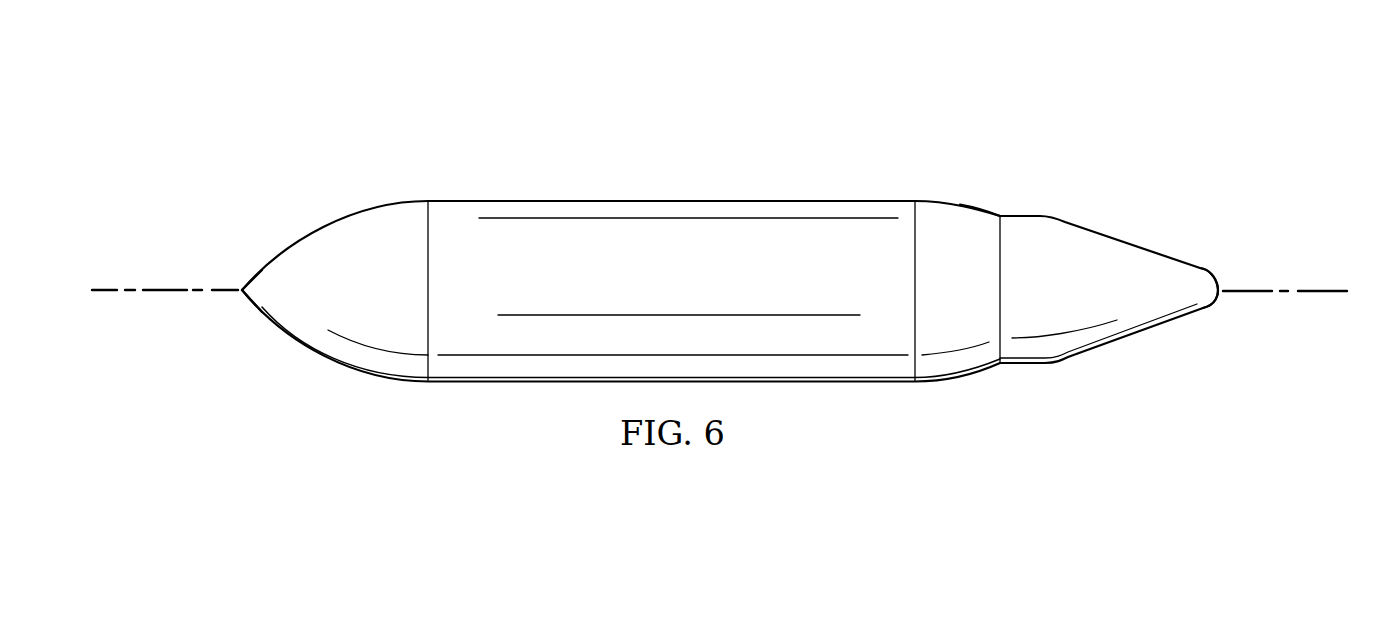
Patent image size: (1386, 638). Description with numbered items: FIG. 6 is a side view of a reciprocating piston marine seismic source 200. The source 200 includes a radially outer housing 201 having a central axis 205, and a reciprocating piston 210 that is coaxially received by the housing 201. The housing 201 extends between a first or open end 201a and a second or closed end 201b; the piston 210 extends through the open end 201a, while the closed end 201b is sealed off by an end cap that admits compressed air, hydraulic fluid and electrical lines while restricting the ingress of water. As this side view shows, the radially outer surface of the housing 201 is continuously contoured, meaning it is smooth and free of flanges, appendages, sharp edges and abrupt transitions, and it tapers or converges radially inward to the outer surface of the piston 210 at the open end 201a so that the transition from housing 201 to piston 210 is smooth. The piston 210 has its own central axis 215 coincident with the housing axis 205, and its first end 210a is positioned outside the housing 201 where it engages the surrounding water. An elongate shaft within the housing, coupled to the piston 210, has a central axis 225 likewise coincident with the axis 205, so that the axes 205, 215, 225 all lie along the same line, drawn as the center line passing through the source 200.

The marine seismic source 200 is at (466, 94).
The radially outer housing 201 is at (677, 192).
The first or open end 201a is at (1003, 188).
The second or closed end 201b is at (254, 303).
The central axis 205 is at (716, 261).
The central axis 215 is at (716, 261).
The central axis 225 is at (162, 289).
The reciprocating piston 210 is at (1150, 240).
The first end 210a is at (1214, 277).